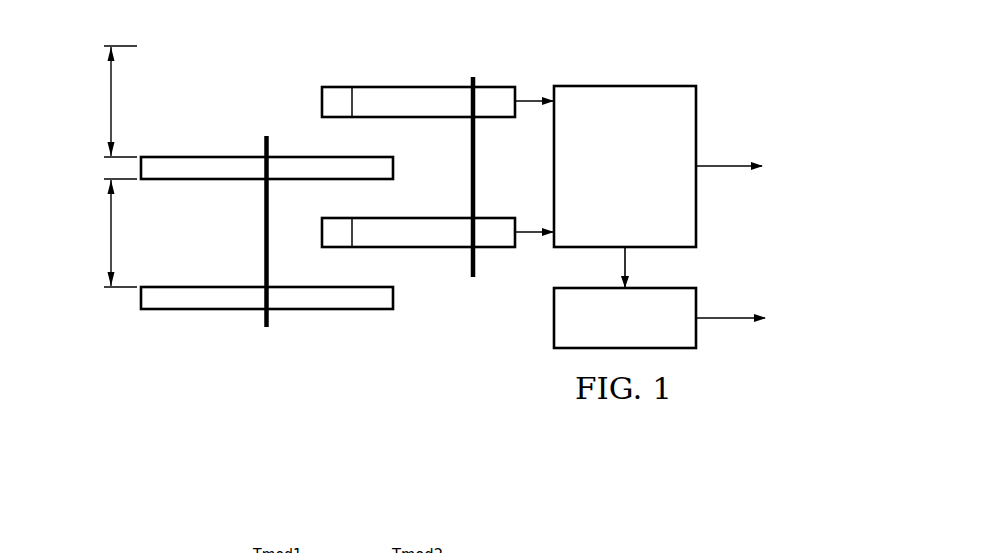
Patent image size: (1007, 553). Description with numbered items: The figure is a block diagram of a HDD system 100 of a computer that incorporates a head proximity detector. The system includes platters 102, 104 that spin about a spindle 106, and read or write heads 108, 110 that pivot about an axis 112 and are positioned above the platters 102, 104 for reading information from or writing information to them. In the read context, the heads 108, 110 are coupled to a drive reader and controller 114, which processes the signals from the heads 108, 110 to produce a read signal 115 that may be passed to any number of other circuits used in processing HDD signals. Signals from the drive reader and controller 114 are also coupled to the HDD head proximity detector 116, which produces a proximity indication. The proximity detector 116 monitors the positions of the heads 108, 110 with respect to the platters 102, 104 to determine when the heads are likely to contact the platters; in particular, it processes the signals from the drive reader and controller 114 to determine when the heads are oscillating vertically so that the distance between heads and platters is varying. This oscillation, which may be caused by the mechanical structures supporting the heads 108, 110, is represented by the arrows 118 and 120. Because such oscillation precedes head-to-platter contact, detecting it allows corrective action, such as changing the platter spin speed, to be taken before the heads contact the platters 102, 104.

The HDD system 100 is at (710, 52).
The platter 102 is at (205, 156).
The platter 104 is at (206, 310).
The spindle 106 is at (264, 231).
The read or write head 108 is at (418, 86).
The read or write head 110 is at (418, 249).
The axis 112 is at (475, 177).
The drive reader and controller 114 is at (606, 222).
The read signal 115 is at (726, 165).
The HDD head proximity detector 116 is at (699, 329).
The arrow 118 is at (110, 101).
The arrow 120 is at (110, 230).